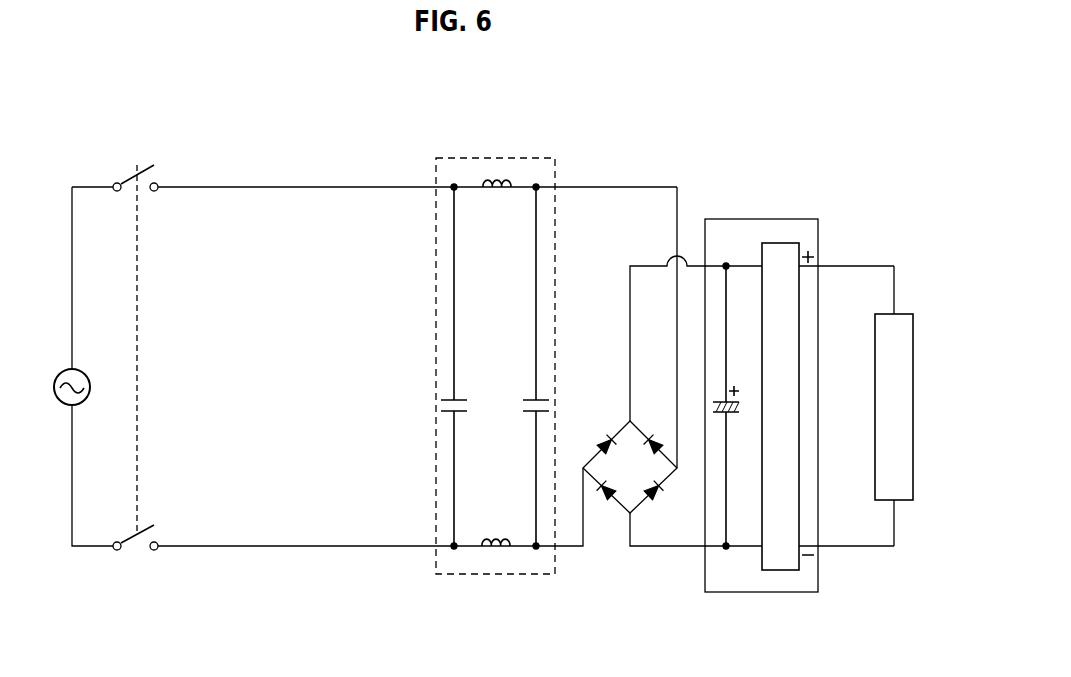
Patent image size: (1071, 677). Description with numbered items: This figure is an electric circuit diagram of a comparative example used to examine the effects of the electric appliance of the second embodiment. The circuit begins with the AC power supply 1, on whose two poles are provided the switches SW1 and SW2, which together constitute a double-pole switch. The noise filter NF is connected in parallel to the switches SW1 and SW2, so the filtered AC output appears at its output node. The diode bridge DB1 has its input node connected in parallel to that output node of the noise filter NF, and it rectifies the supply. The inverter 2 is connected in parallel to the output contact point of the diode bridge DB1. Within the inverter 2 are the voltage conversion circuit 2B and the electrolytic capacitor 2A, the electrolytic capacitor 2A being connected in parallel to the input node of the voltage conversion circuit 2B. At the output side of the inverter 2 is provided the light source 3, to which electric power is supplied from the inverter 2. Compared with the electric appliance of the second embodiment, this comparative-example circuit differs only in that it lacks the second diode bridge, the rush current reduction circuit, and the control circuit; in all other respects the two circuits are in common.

The AC power supply 1 is at (80, 369).
The switch SW1 is at (127, 182).
The switch SW2 is at (137, 550).
The noise filter NF is at (522, 158).
The diode bridge DB1 is at (619, 432).
The inverter 2 is at (748, 218).
The electrolytic capacitor 2A is at (730, 414).
The voltage conversion circuit 2B is at (779, 242).
The light source 3 is at (901, 313).